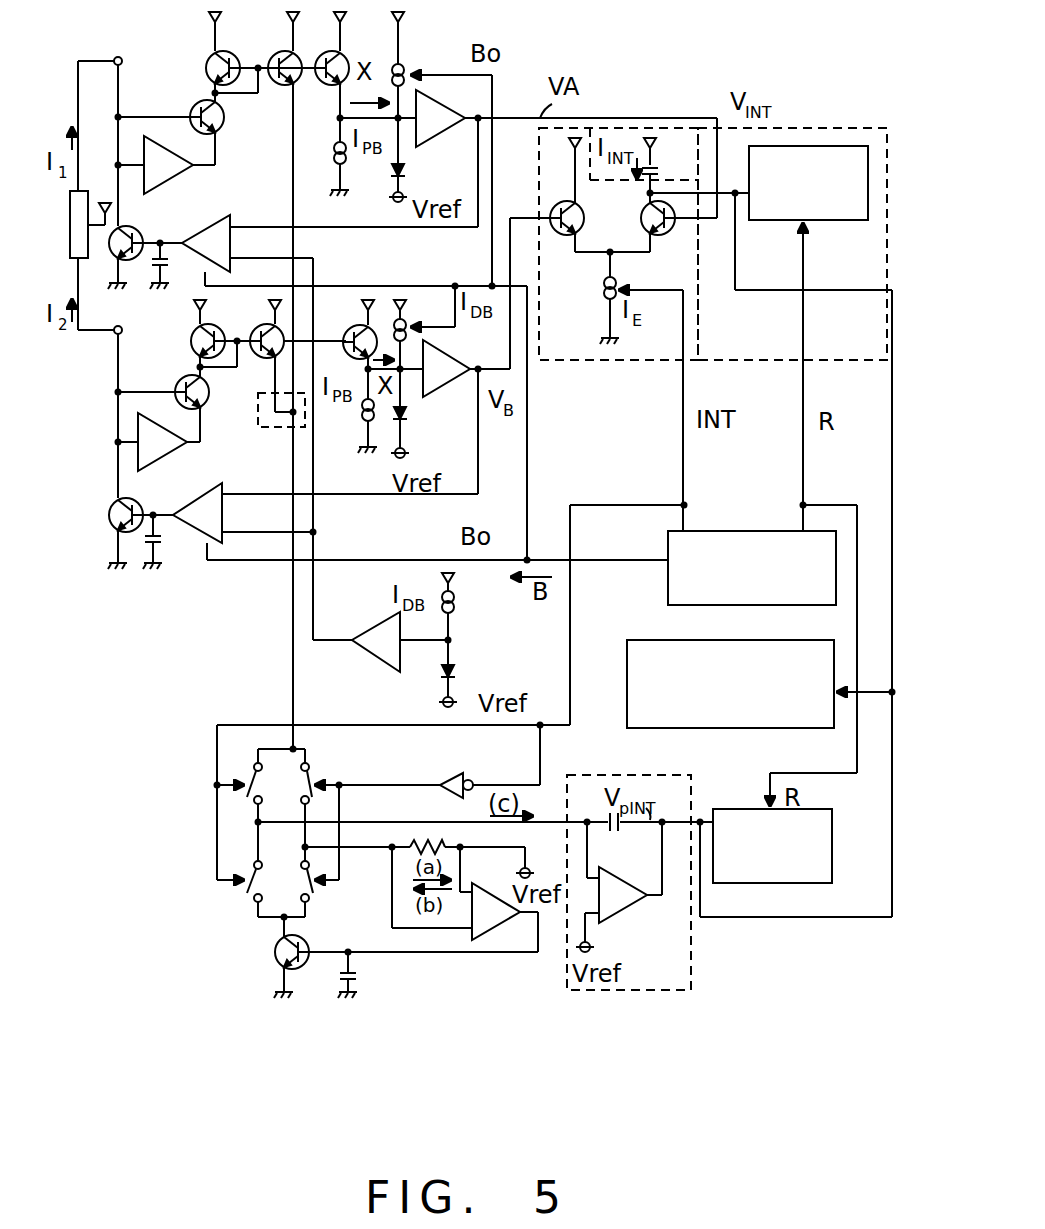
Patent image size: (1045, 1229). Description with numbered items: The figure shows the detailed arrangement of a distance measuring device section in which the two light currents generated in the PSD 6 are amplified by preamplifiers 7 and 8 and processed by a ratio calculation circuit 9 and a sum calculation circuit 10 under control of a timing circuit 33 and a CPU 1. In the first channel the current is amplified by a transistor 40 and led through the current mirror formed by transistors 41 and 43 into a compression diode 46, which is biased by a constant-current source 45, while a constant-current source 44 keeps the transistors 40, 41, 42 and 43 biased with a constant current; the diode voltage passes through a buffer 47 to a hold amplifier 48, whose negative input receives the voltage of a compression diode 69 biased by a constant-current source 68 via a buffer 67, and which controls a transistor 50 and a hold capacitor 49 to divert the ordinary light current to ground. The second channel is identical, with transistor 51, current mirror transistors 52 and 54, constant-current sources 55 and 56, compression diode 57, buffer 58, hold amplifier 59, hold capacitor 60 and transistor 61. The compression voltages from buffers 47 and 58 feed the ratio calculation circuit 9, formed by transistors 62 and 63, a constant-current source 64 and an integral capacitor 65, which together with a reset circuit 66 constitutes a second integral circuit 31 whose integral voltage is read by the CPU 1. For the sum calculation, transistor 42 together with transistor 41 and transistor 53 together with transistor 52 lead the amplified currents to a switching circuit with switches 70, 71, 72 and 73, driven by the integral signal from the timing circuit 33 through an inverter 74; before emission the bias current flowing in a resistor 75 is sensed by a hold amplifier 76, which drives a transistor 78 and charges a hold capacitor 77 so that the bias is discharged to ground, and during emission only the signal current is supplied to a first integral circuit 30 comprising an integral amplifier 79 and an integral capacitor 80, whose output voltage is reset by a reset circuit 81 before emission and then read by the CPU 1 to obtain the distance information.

The CPU 1 is at (625, 674).
The PSD 6 is at (70, 228).
The preamplifier 7 is at (196, 175).
The preamplifier 8 is at (178, 456).
The ratio calculation circuit 9 is at (618, 262).
The sum calculation circuit 10 is at (256, 420).
The first integral circuit 30 is at (576, 774).
The second integral circuit 31 is at (884, 129).
The timing circuit 33 is at (720, 524).
The transistor 40 is at (222, 128).
The transistor 41 is at (235, 45).
The transistor 42 is at (300, 45).
The transistor 43 is at (357, 67).
The constant-current source 44 is at (326, 157).
The constant-current source 45 is at (405, 60).
The compression diode 46 is at (420, 160).
The buffer 47 is at (464, 100).
The hold amplifier 48 is at (228, 214).
The hold capacitor 49 is at (162, 243).
The transistor 50 is at (132, 262).
The transistor 51 is at (176, 382).
The transistor 52 is at (190, 340).
The transistor 53 is at (285, 354).
The transistor 54 is at (348, 320).
The constant-current source 55 is at (356, 423).
The constant-current source 56 is at (410, 322).
The compression diode 57 is at (408, 412).
The buffer 58 is at (462, 360).
The hold amplifier 59 is at (206, 483).
The hold capacitor 60 is at (166, 540).
The transistor 61 is at (106, 506).
The transistor 62 is at (644, 230).
The transistor 63 is at (590, 200).
The constant-current source 64 is at (596, 298).
The integral capacitor 65 is at (662, 165).
The reset circuit 66 is at (820, 222).
The buffer 67 is at (358, 628).
The constant-current source 68 is at (458, 607).
The compression diode 69 is at (456, 675).
The switch 70 is at (248, 770).
The switch 71 is at (240, 893).
The switch 72 is at (312, 772).
The switch 73 is at (312, 897).
The inverter 74 is at (452, 772).
The resistor 75 is at (426, 838).
The hold amplifier 76 is at (500, 930).
The hold capacitor 77 is at (362, 983).
The transistor 78 is at (274, 956).
The integral amplifier 79 is at (630, 905).
The integral capacitor 80 is at (485, 839).
The reset circuit 81 is at (740, 806).